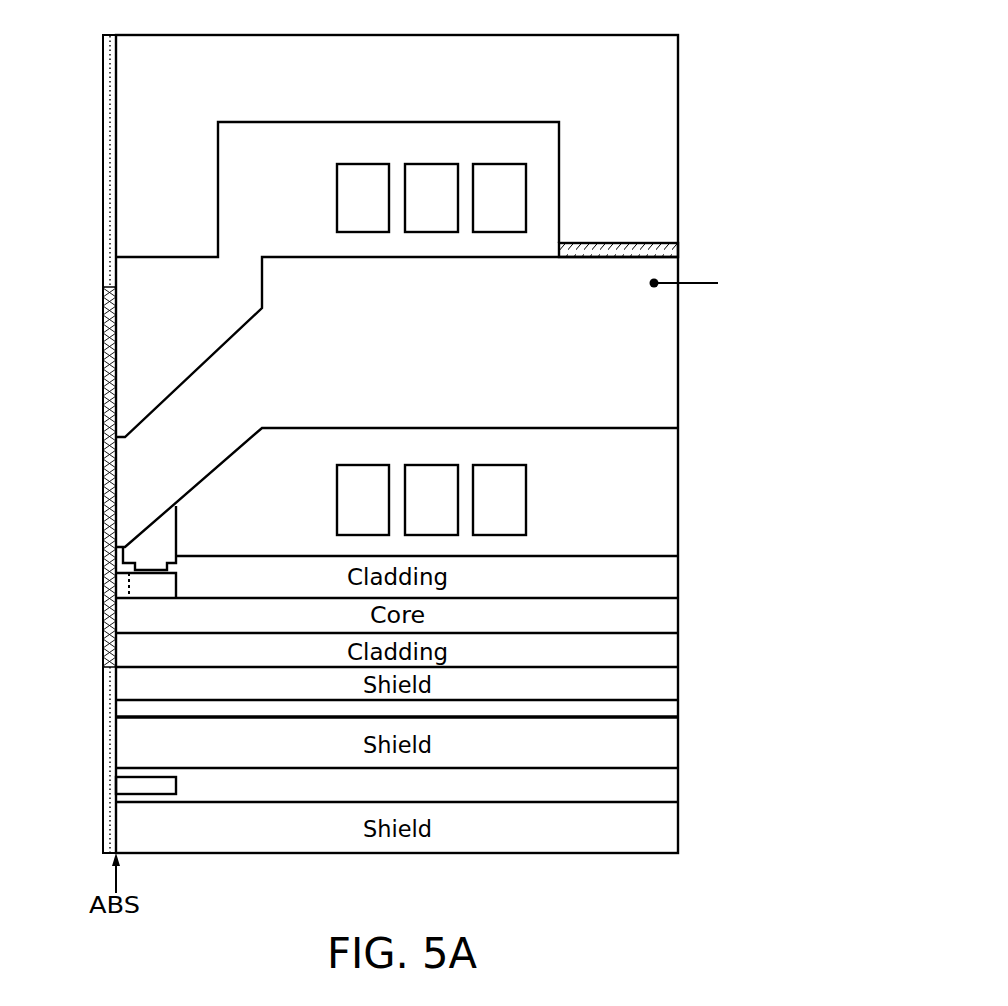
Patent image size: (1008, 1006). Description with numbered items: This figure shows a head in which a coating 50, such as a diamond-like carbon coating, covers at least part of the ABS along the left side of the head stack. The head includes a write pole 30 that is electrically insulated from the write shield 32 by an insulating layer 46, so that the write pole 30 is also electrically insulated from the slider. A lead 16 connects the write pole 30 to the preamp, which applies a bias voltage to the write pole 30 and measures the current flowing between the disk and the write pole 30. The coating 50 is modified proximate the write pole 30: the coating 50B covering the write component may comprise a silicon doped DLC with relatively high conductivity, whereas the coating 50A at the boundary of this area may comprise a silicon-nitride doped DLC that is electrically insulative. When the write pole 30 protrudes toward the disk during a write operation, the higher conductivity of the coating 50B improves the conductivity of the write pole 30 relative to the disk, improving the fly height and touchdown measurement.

The coating 50 is at (95, 46).
The coating 50A is at (110, 203).
The coating 50B is at (108, 482).
The write shield 32 is at (662, 196).
The insulating layer 46 is at (651, 231).
The write pole 30 is at (662, 420).
The lead 16 is at (692, 283).